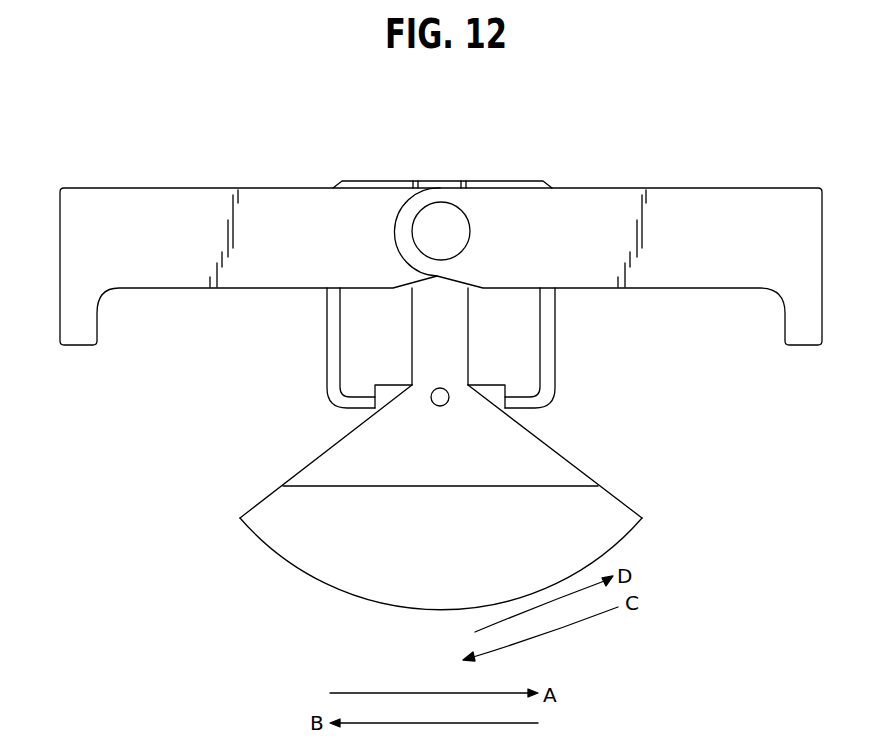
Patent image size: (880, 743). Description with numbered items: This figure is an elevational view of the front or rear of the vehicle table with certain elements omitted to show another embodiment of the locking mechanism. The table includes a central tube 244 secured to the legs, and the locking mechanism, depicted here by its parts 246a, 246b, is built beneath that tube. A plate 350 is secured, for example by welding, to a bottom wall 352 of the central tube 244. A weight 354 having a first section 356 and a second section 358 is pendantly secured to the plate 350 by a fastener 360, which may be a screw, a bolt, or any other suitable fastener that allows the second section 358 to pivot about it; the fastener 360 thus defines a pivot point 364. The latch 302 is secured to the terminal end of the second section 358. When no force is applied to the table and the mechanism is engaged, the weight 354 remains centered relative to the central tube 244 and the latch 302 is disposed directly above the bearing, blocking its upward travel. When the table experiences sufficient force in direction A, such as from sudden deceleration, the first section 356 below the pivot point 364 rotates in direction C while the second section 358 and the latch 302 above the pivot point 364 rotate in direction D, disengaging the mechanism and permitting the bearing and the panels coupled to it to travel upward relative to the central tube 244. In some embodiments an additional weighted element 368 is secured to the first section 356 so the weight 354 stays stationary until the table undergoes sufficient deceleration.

The central tube 244 is at (334, 360).
The latch 302 is at (438, 182).
The first arm 246a is at (580, 422).
The second arm 246b is at (635, 371).
The second section 358 is at (432, 308).
The plate 350 is at (388, 398).
The bottom wall 352 is at (527, 403).
The fastener 360 is at (443, 406).
The pivot point 364 is at (437, 406).
The weight 354 is at (634, 530).
The first section 356 is at (300, 473).
The additional weighted element 368 is at (323, 550).